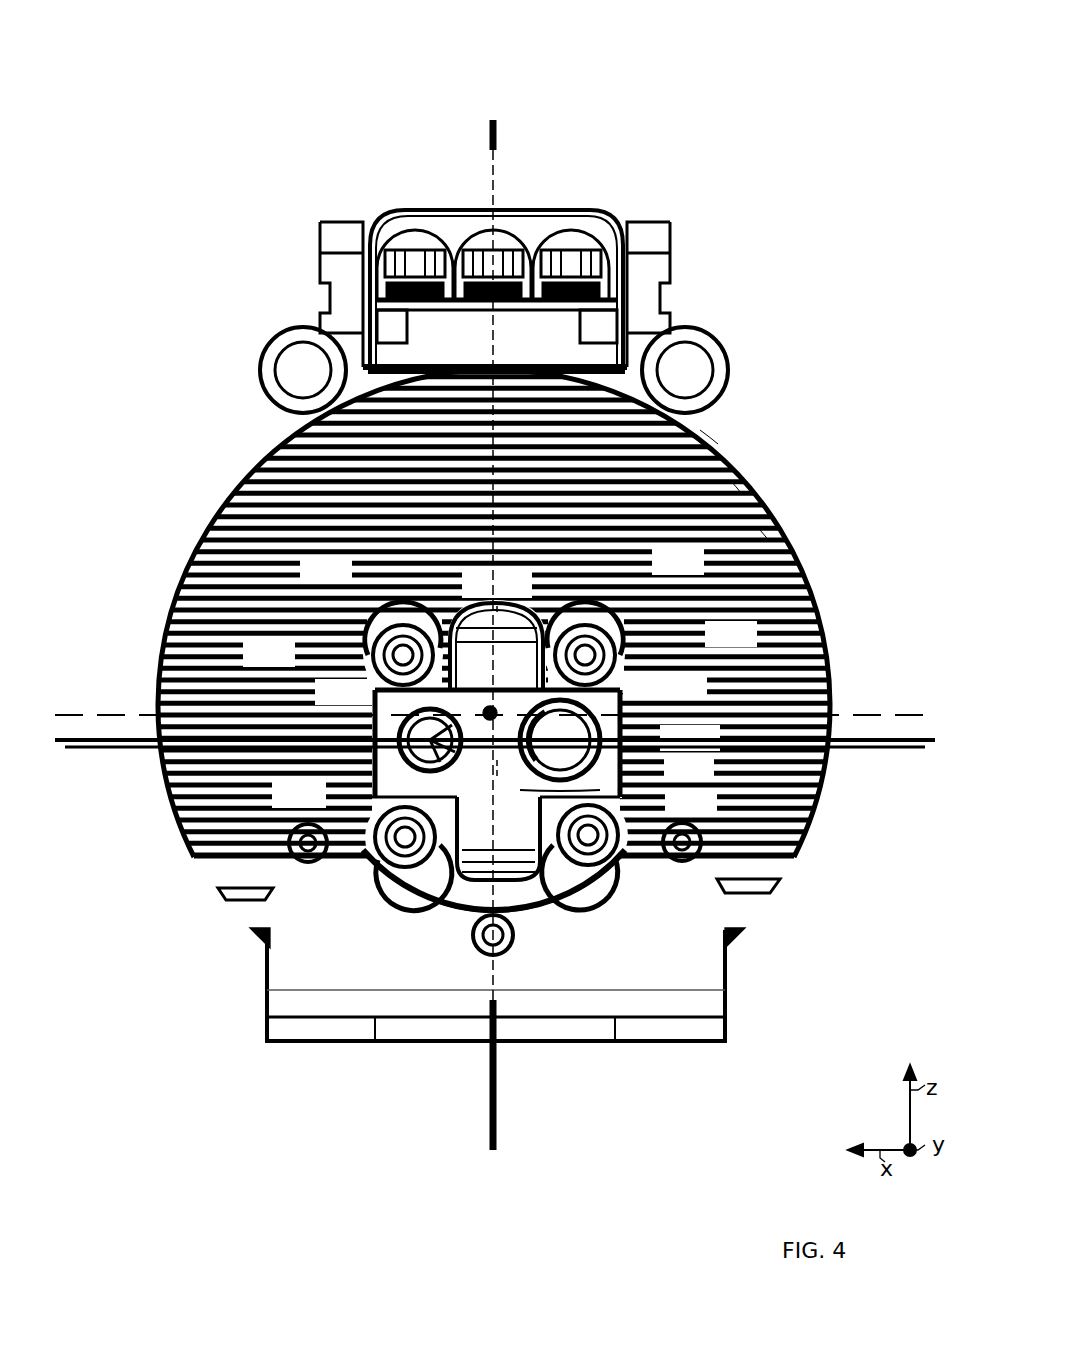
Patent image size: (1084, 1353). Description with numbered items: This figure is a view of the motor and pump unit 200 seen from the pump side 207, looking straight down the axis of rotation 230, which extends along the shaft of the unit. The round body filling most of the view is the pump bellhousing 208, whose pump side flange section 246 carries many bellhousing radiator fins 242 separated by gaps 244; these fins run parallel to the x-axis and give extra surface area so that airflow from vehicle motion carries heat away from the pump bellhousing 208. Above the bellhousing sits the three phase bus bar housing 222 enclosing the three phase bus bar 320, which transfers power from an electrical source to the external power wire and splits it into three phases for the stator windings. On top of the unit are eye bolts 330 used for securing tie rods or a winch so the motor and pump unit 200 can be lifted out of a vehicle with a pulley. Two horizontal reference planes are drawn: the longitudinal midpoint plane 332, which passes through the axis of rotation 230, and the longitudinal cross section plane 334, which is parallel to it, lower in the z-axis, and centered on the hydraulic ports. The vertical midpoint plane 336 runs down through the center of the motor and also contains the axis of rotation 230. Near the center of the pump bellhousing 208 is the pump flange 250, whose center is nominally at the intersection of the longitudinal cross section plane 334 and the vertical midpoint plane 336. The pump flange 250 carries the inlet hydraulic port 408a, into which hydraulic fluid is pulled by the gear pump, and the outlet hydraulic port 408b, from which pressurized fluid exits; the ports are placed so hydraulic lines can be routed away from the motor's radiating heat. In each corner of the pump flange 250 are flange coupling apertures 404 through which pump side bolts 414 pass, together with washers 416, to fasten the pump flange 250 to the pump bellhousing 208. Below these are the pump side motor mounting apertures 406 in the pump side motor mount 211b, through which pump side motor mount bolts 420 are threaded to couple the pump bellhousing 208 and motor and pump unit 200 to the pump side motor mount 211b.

The motor and pump unit 200 is at (320, 82).
The pump side 207 is at (516, 39).
The pump bellhousing 208 is at (222, 445).
The pump side motor mount 211b is at (712, 970).
The three phase bus bar housing 222 is at (550, 205).
The axis of rotation 230 is at (492, 712).
The bellhousing radiator fins 242 is at (742, 492).
The gaps 244 is at (770, 538).
The pump side flange section 246 is at (720, 440).
The pump flange 250 is at (600, 762).
The three phase bus bar 320 is at (583, 252).
The eye bolts 330 is at (290, 342).
The longitudinal midpoint plane 332 is at (147, 714).
The longitudinal cross section plane 334 is at (125, 744).
The vertical midpoint plane 336 is at (496, 150).
The flange coupling apertures 404 is at (418, 628).
The pump side motor mounting apertures 406 is at (305, 865).
The inlet hydraulic port 408a is at (425, 722).
The outlet hydraulic port 408b is at (590, 742).
The pump side bolts 414 is at (385, 650).
The washers 416 is at (497, 607).
The pump side motor mount bolts 420 is at (550, 955).